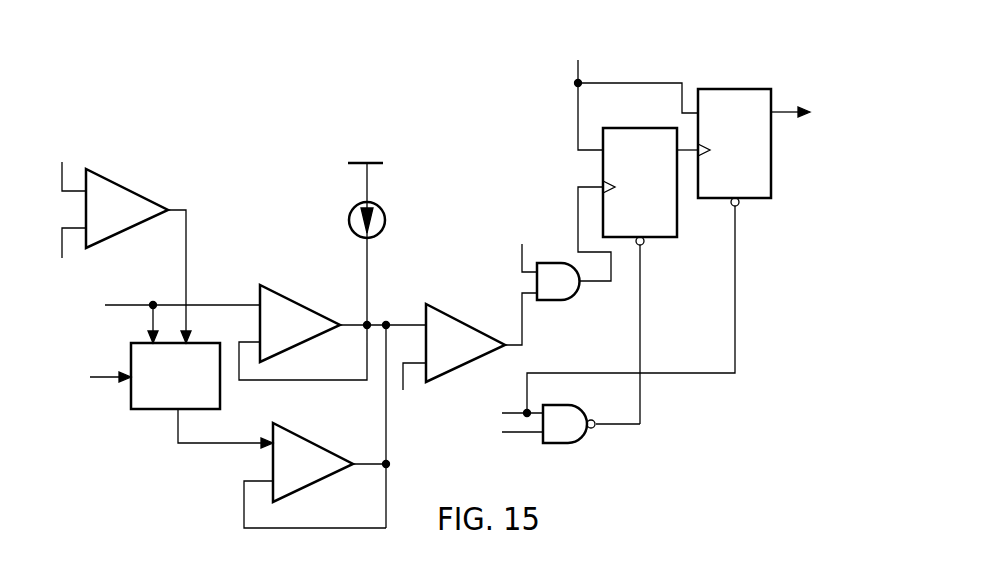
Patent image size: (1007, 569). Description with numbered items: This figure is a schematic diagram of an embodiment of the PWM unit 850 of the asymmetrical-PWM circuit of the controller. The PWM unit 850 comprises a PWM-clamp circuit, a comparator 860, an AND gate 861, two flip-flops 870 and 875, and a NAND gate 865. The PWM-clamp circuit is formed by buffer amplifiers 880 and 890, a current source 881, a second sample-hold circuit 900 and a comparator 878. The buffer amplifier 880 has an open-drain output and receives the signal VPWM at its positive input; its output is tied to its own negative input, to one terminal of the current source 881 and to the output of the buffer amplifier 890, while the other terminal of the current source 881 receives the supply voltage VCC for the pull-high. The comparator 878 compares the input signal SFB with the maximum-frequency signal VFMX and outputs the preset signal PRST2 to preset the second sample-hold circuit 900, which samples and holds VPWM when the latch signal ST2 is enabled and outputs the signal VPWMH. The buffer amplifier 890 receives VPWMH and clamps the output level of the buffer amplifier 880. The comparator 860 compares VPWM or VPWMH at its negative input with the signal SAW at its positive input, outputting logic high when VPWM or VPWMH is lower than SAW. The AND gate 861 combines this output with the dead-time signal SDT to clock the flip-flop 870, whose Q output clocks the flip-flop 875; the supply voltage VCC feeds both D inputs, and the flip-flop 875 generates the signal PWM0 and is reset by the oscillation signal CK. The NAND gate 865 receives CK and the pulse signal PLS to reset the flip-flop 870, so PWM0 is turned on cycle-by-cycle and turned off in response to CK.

The PWM unit 850 is at (757, 41).
The comparator 878 is at (127, 203).
The second sample-hold circuit 900 is at (183, 364).
The buffer amplifier 880 is at (300, 318).
The current source 881 is at (389, 232).
The buffer amplifier 890 is at (313, 458).
The comparator 860 is at (465, 337).
The AND gate 861 is at (558, 270).
The flip-flop 870 is at (640, 174).
The flip-flop 875 is at (737, 136).
The NAND gate 865 is at (569, 412).